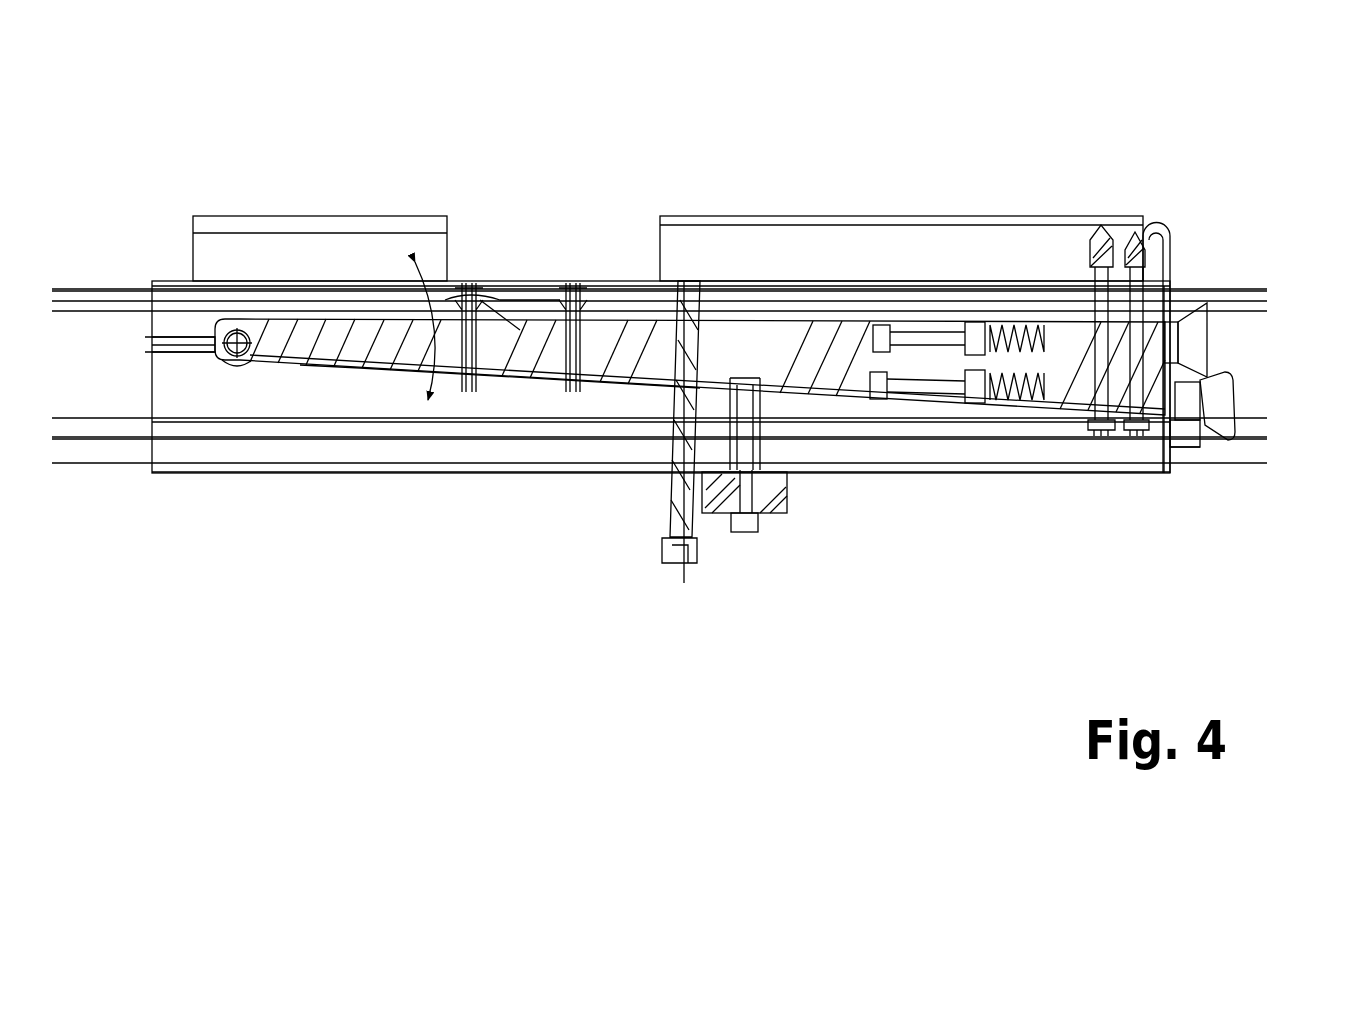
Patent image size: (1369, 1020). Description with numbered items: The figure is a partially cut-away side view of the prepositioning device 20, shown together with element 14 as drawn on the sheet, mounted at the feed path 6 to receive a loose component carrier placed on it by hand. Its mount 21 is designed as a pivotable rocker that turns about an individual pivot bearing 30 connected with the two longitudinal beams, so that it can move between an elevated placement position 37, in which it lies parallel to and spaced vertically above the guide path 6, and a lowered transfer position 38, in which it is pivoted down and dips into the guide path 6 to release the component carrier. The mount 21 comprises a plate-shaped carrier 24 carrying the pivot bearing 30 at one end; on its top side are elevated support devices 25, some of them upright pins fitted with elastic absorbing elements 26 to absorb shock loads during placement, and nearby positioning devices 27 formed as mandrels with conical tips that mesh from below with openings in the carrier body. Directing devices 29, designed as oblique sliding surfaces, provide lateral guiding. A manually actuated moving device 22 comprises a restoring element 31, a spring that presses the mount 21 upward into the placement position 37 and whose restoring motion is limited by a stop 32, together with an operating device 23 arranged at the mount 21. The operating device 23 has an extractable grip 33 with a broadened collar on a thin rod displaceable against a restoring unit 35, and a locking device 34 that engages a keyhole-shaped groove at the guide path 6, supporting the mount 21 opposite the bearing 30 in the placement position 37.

The feed path 6 is at (95, 442).
The holding device 14 is at (661, 266).
The prepositioning device 20 is at (537, 240).
The mount 21 is at (265, 378).
The moving device 22 is at (182, 378).
The operating device 23 is at (1198, 428).
The carrier 24 is at (375, 372).
The support devices 25 is at (592, 283).
The absorbing element 26 is at (1170, 230).
The positioning devices 27 is at (1098, 230).
The directing devices 29 is at (283, 252).
The pivot bearing 30 is at (237, 341).
The restoring element 31 is at (760, 418).
The stop 32 is at (690, 533).
The grip 33 is at (1228, 425).
The locking device 34 is at (1170, 322).
The restoring unit 35 is at (1020, 330).
The placement position 37 is at (1235, 346).
The transfer position 38 is at (1245, 400).